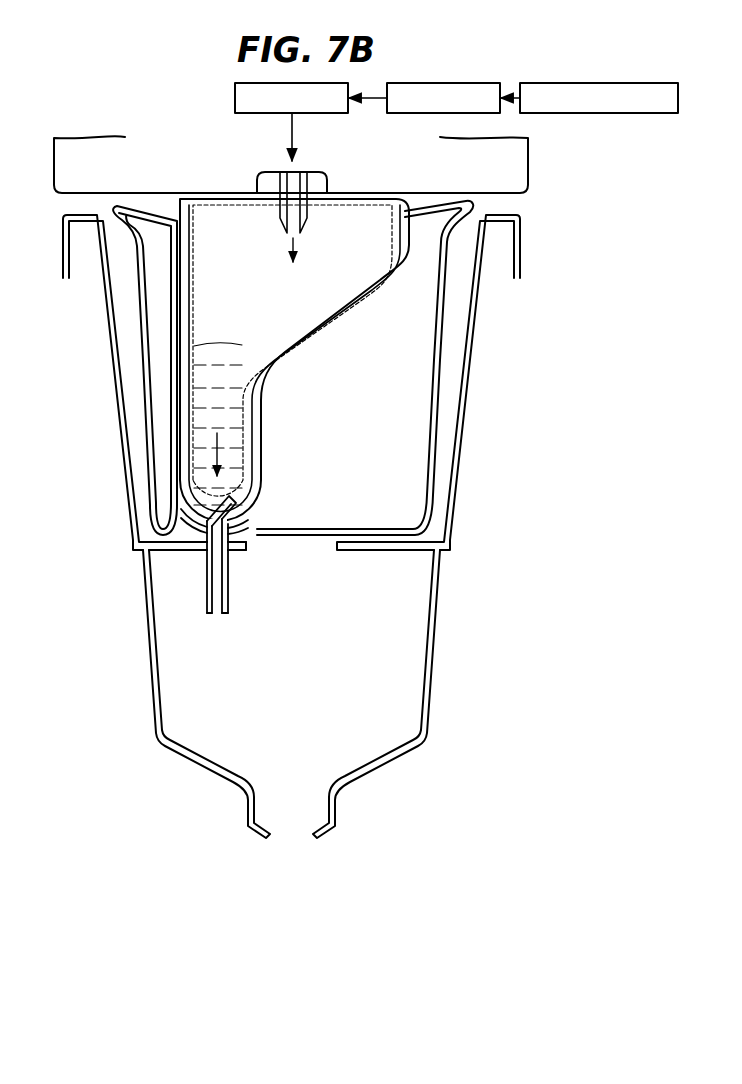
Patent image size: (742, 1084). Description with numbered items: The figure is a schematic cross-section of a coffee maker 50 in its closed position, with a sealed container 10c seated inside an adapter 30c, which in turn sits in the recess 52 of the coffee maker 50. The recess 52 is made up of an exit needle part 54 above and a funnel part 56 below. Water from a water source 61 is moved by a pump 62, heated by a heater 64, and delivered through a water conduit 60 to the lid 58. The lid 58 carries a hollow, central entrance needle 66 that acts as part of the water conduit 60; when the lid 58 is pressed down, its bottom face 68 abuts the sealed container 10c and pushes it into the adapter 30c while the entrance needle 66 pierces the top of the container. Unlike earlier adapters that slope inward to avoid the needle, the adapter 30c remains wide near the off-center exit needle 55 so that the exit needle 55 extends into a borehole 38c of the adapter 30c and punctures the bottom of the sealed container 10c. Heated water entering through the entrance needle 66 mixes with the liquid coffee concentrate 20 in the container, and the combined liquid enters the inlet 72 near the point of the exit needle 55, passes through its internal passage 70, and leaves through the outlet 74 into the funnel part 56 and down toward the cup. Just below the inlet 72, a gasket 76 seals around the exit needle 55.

The lid 58 is at (92, 145).
The heater 64 is at (235, 98).
The pump 62 is at (440, 83).
The water source 61 is at (598, 83).
The water conduit 60 is at (291, 171).
The entrance needle 66 is at (281, 222).
The sealed container 10c is at (164, 203).
The bottom face 68 is at (517, 194).
The coffee maker 50 is at (348, 483).
The liquid coffee concentrate 20 is at (213, 355).
The adapter 30c is at (138, 375).
The exit needle part 54 is at (462, 399).
The exit needle 55 is at (220, 508).
The inlet 72 is at (235, 500).
The recess 52 is at (437, 494).
The borehole 38c is at (243, 536).
The gasket 76 is at (190, 531).
The internal passage 70 is at (228, 578).
The outlet 74 is at (216, 614).
The funnel part 56 is at (437, 648).